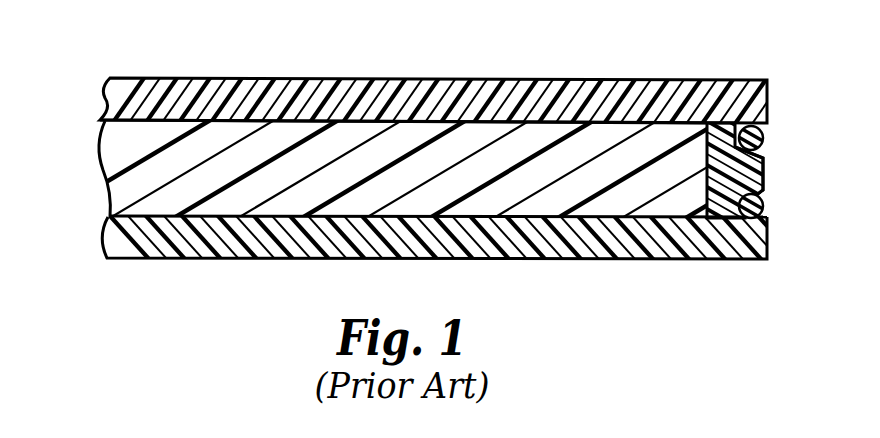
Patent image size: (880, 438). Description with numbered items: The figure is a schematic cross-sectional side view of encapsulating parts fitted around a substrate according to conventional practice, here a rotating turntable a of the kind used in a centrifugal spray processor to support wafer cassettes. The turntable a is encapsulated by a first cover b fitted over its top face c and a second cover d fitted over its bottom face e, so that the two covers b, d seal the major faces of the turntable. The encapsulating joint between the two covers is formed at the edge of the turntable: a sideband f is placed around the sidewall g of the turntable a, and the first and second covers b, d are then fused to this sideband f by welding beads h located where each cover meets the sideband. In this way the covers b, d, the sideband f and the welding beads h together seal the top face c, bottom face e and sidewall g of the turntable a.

The turntable a is at (112, 159).
The first cover b is at (253, 85).
The top face c is at (357, 122).
The second cover d is at (227, 258).
The bottom face e is at (330, 222).
The sideband f is at (752, 158).
The sidewall g is at (725, 140).
The welding beads h is at (758, 140).